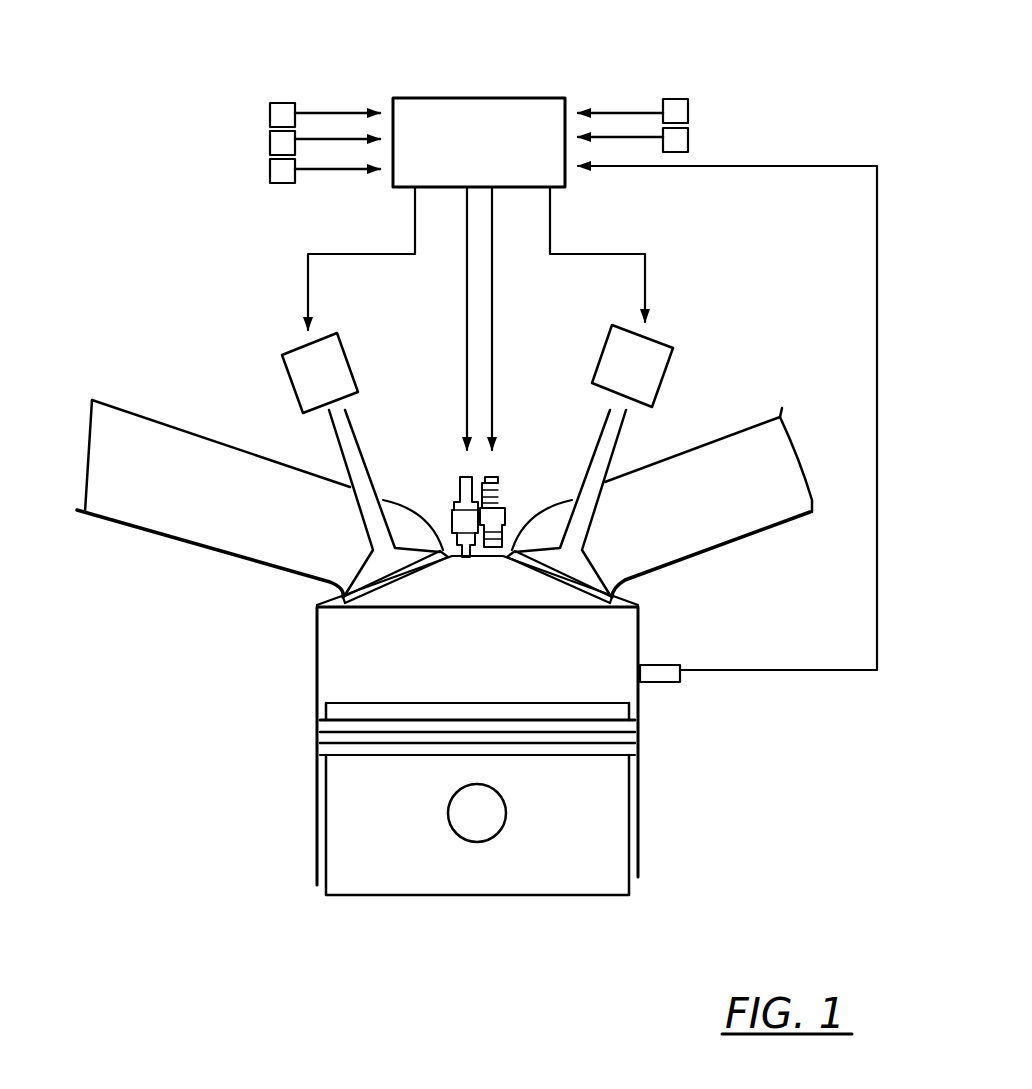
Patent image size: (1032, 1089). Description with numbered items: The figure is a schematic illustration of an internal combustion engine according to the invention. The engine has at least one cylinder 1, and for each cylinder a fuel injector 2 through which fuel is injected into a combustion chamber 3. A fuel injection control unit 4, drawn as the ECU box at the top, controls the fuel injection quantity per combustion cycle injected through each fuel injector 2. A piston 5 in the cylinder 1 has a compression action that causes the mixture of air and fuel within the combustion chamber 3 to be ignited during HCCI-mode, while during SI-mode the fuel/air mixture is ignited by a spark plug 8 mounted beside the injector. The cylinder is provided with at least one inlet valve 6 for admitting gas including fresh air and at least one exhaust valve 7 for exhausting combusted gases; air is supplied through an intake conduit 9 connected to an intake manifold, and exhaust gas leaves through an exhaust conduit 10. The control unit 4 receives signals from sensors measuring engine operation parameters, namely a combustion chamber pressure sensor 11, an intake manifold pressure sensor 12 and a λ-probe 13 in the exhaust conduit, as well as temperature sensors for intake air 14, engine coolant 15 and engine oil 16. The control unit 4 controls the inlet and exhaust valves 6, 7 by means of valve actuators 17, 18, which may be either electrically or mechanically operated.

The cylinder 1 is at (317, 670).
The fuel injector 2 is at (455, 478).
The combustion chamber 3 is at (495, 669).
The fuel injection control unit 4 is at (482, 97).
The piston 5 is at (640, 777).
The inlet valve 6 is at (362, 443).
The exhaust valve 7 is at (593, 443).
The spark plug 8 is at (497, 478).
The intake conduit 9 is at (80, 512).
The exhaust conduit 10 is at (735, 545).
The combustion chamber pressure sensor 11 is at (662, 683).
The intake manifold pressure sensor 12 is at (692, 138).
The λ-probe 13 is at (690, 108).
The intake air temperature sensor 14 is at (270, 172).
The engine coolant temperature sensor 15 is at (268, 142).
The engine oil temperature sensor 16 is at (266, 112).
The valve actuator 17 is at (300, 388).
The valve actuator 18 is at (655, 382).